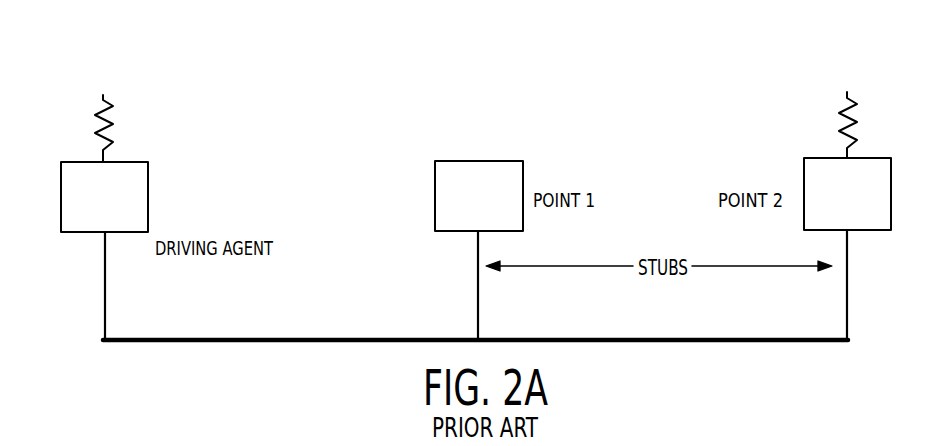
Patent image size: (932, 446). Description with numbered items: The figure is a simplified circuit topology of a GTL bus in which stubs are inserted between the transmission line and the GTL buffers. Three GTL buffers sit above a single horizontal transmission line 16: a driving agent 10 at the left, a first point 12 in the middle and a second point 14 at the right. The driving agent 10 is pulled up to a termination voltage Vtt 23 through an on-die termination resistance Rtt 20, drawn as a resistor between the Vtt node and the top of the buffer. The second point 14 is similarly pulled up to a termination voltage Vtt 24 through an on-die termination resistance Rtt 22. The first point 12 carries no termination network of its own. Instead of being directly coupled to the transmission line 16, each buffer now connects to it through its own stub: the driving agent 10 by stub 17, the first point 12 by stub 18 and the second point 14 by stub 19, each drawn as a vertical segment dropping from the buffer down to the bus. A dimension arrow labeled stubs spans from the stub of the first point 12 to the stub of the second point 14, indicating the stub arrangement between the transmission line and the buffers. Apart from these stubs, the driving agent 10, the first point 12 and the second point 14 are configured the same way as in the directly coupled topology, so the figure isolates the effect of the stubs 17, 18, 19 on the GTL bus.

The driving agent 10 is at (148, 163).
The point 1 12 is at (523, 163).
The point 2 14 is at (804, 159).
The transmission line 16 is at (355, 342).
The stub 17 is at (105, 311).
The stub 18 is at (478, 290).
The stub 19 is at (847, 307).
The on-die termination resistance 20 is at (151, 120).
The on-die termination resistance 22 is at (802, 118).
The termination voltage Vtt 23 is at (120, 63).
The termination voltage Vtt 24 is at (830, 64).